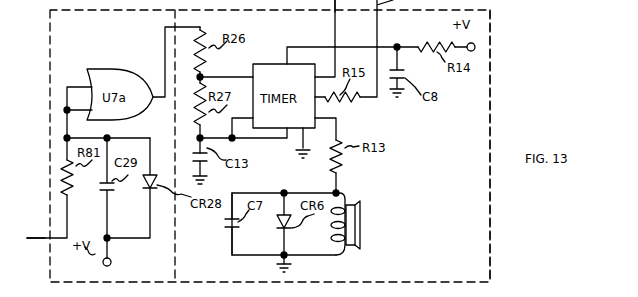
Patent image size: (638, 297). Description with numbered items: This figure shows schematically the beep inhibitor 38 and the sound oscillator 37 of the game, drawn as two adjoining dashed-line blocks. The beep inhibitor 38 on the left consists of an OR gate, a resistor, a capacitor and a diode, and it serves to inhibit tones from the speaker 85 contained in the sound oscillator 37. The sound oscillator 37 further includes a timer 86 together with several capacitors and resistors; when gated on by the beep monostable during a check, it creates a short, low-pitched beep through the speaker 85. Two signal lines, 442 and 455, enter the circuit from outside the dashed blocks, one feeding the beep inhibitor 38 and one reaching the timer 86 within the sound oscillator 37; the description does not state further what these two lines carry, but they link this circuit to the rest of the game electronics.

The beep inhibitor 38 is at (50, 25).
The sound oscillator 37 is at (490, 80).
The input line 442 is at (46, 243).
The reset line 455 is at (335, 7).
The timer 86 is at (325, 107).
The speaker 85 is at (362, 219).